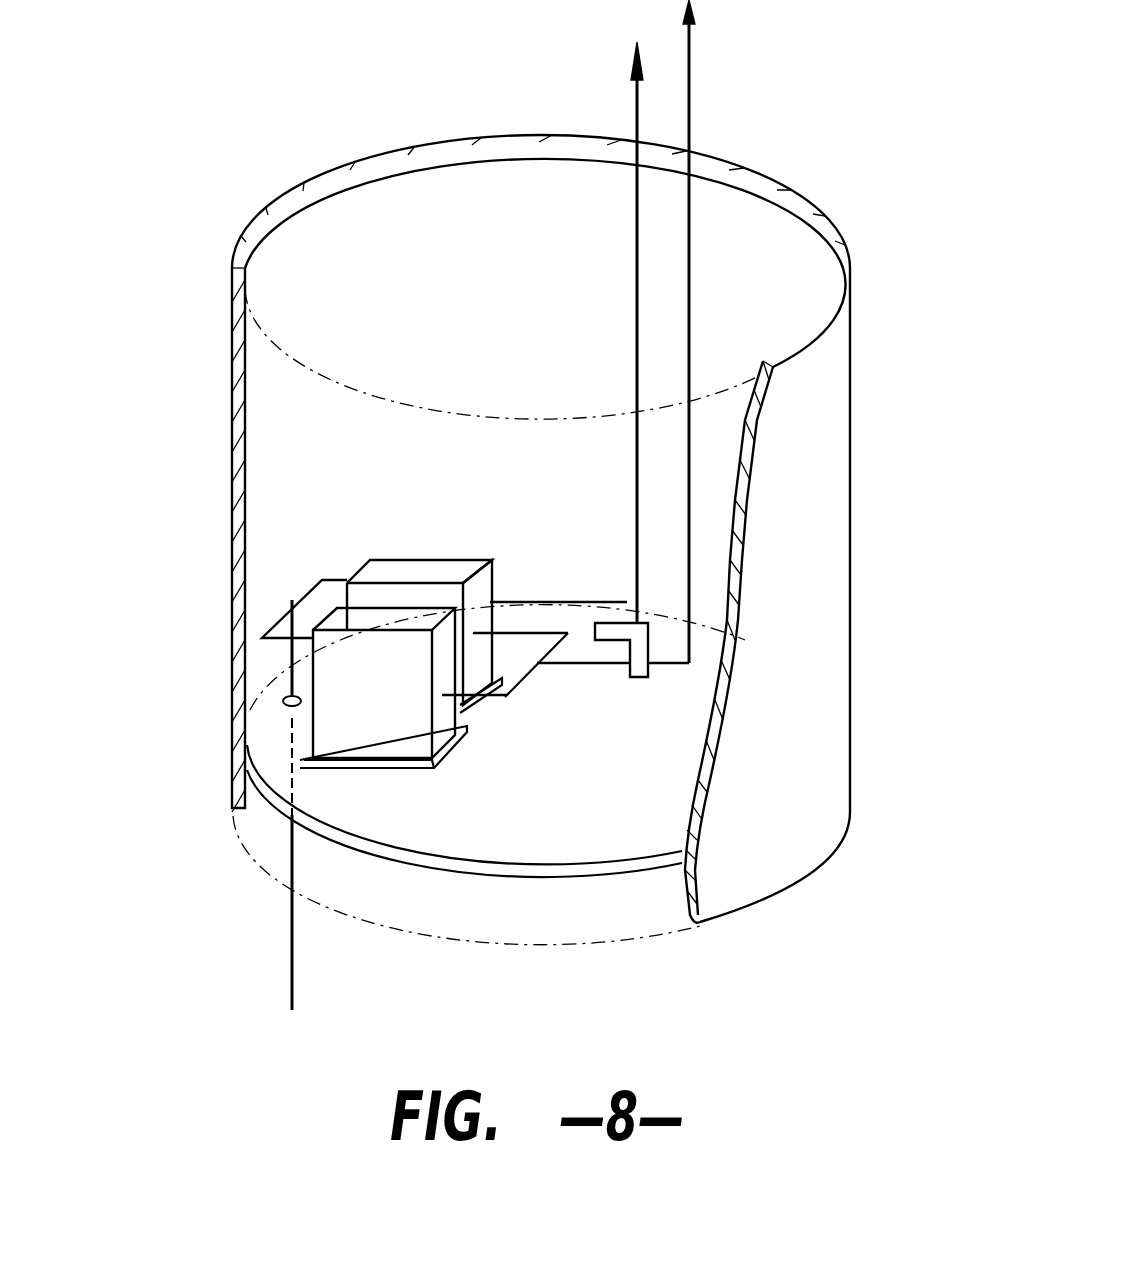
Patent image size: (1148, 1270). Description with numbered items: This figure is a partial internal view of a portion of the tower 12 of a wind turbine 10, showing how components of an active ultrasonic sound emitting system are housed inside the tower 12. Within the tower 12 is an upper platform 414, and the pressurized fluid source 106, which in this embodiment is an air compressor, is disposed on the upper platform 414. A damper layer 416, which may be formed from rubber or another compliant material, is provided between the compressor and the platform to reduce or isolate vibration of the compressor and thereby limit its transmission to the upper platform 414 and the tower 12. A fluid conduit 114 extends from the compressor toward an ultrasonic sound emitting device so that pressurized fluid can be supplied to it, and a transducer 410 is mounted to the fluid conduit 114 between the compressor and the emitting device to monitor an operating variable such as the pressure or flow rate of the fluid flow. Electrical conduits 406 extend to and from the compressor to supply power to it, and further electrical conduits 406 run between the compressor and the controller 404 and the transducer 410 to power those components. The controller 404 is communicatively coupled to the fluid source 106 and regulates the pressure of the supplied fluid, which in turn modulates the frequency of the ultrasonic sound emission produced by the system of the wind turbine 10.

The wind turbine 10 is at (318, 128).
The tower 12 is at (203, 455).
The fluid conduit 114 is at (689, 312).
The electrical conduit 406 is at (628, 523).
The controller 404 is at (404, 572).
The pressurized fluid source 106 is at (442, 552).
The transducer 410 is at (615, 628).
The damper layer 416 is at (490, 701).
The upper platform 414 is at (573, 834).